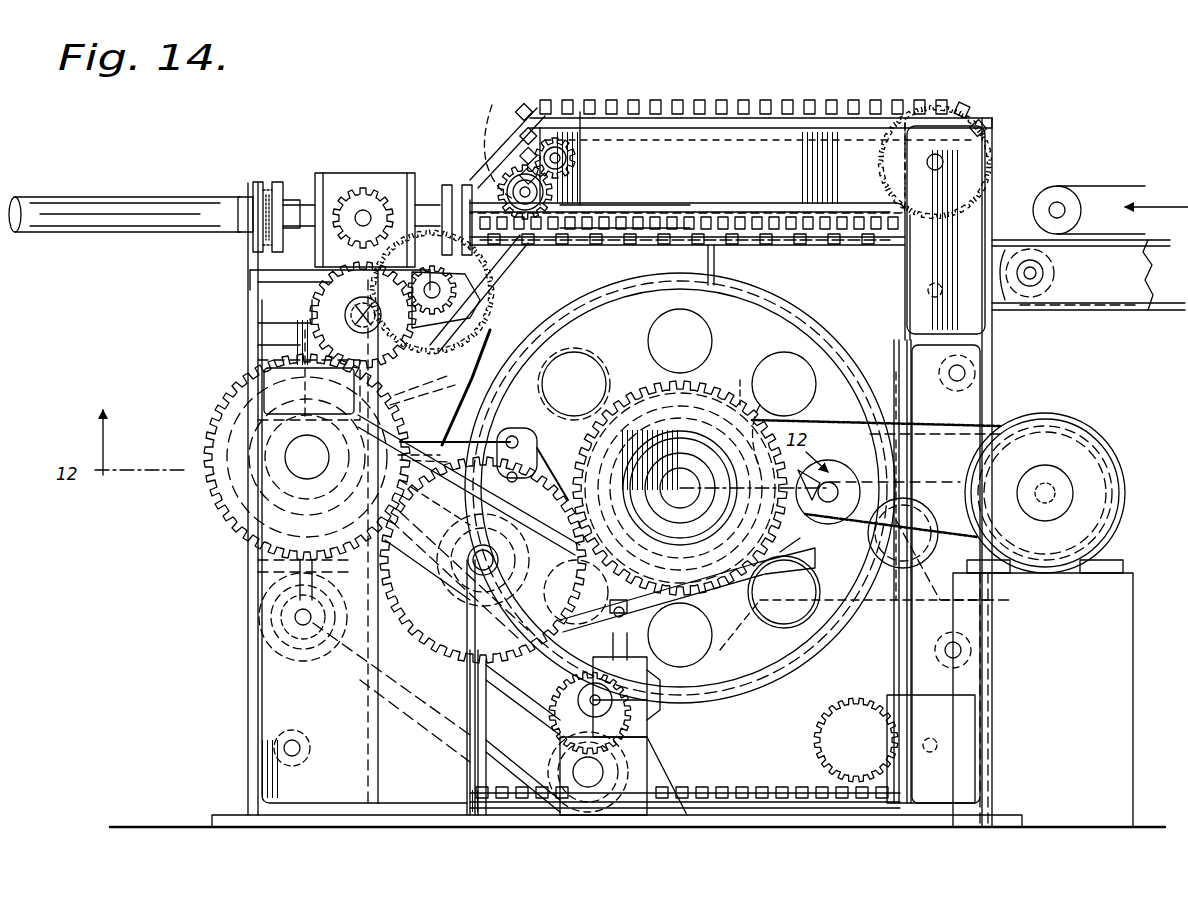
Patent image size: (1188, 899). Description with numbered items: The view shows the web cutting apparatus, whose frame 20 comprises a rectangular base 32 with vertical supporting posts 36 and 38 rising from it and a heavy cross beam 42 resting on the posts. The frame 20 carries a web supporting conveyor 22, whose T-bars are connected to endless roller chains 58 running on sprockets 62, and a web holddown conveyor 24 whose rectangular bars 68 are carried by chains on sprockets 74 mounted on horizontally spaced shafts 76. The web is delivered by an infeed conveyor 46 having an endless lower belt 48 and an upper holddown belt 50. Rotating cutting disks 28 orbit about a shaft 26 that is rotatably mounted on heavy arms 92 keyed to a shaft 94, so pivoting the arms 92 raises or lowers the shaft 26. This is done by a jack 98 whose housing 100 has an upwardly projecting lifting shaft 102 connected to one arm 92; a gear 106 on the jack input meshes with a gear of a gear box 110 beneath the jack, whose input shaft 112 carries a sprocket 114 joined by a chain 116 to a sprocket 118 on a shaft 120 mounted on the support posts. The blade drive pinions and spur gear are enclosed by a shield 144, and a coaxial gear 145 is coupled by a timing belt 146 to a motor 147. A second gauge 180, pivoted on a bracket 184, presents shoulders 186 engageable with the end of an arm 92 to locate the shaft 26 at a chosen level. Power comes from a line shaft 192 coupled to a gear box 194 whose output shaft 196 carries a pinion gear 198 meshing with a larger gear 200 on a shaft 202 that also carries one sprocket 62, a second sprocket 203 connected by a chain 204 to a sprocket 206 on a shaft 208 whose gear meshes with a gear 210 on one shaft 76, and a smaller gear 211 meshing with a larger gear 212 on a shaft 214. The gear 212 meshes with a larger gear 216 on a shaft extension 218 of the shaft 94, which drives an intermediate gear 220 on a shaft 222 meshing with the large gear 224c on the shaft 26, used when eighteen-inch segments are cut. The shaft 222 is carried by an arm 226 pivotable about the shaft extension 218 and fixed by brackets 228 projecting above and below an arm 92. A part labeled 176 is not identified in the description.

The frame 20 is at (235, 668).
The web supporting conveyor 22 is at (842, 248).
The web holddown conveyor 24 is at (880, 95).
The shaft 26 is at (680, 470).
The cutting disks 28 is at (702, 292).
The base 32 is at (215, 812).
The vertical supporting post 36 is at (270, 708).
The vertical supporting post 38 is at (980, 400).
The cross beam 42 is at (765, 245).
The infeed conveyor 46 is at (300, 364).
The lower conveyor belt 48 is at (1148, 282).
The upper holddown conveyor belt 50 is at (1120, 183).
The endless roller chains 58 is at (785, 800).
The sprockets 62 is at (912, 286).
The bars 68 is at (655, 100).
The sprockets 74 is at (740, 118).
The shafts 76 is at (562, 137).
The arms 92 is at (784, 592).
The shaft 94 is at (290, 447).
The jack 98 is at (662, 724).
The housing 100 is at (665, 700).
The lifting shaft 102 is at (630, 640).
The gear 106 is at (580, 698).
The gear box 110 is at (640, 748).
The input shaft 112 is at (600, 772).
The sprocket 114 is at (532, 815).
The chain 116 is at (560, 742).
The sprocket 118 is at (452, 377).
The shaft 120 is at (300, 617).
The housing or shield 144 is at (872, 620).
The gear 145 is at (745, 412).
The timing belt 146 is at (962, 430).
The motor 147 is at (1112, 458).
The pawl lever 176 is at (470, 395).
The second gauge 180 is at (885, 418).
The bracket 184 is at (950, 487).
The shoulders 186 is at (802, 566).
The line shaft 192 is at (66, 200).
The gear box 194 is at (330, 173).
The output shaft 196 is at (363, 210).
The pinion gear 198 is at (385, 188).
The larger gear 200 is at (345, 240).
The shaft 202 is at (250, 270).
The second sprocket 203 is at (500, 305).
The chain 204 is at (482, 272).
The sprocket 206 is at (492, 135).
The shaft 208 is at (600, 196).
The gear 210 is at (560, 168).
The smaller gear 211 is at (335, 300).
The larger gear 212 is at (330, 310).
The shaft 214 is at (353, 320).
The larger gear 216 is at (225, 512).
The shaft extension 218 is at (296, 452).
The intermediate gear 220 is at (352, 580).
The shaft 222 is at (468, 557).
The large gear 224c is at (775, 628).
The arm 226 is at (335, 586).
The brackets 228 is at (548, 432).